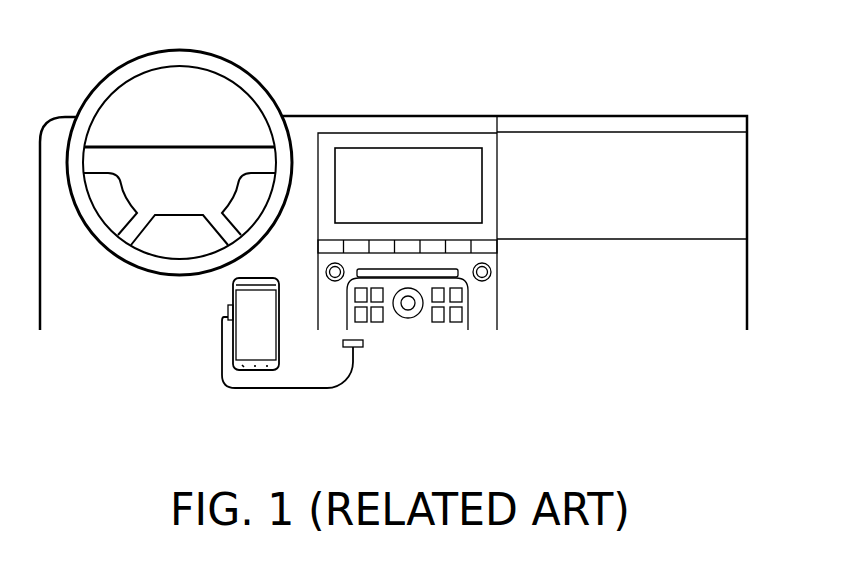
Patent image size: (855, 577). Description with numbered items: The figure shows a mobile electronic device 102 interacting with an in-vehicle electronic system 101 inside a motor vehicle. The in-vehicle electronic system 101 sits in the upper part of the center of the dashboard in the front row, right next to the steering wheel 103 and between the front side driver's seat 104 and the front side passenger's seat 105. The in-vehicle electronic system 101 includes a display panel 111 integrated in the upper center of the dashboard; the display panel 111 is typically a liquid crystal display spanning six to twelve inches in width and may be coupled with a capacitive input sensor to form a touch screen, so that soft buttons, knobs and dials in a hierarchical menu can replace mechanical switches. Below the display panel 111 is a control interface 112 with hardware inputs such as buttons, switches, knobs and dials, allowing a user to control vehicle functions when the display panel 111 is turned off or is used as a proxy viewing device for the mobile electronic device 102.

The in-vehicle electronic system 101 is at (447, 125).
The mobile electronic device 102 is at (253, 355).
The steering wheel 103 is at (177, 58).
The front side driver's seat 104 is at (108, 310).
The front side passenger's seat 105 is at (622, 220).
The display panel 111 is at (375, 172).
The control interface 112 is at (482, 308).